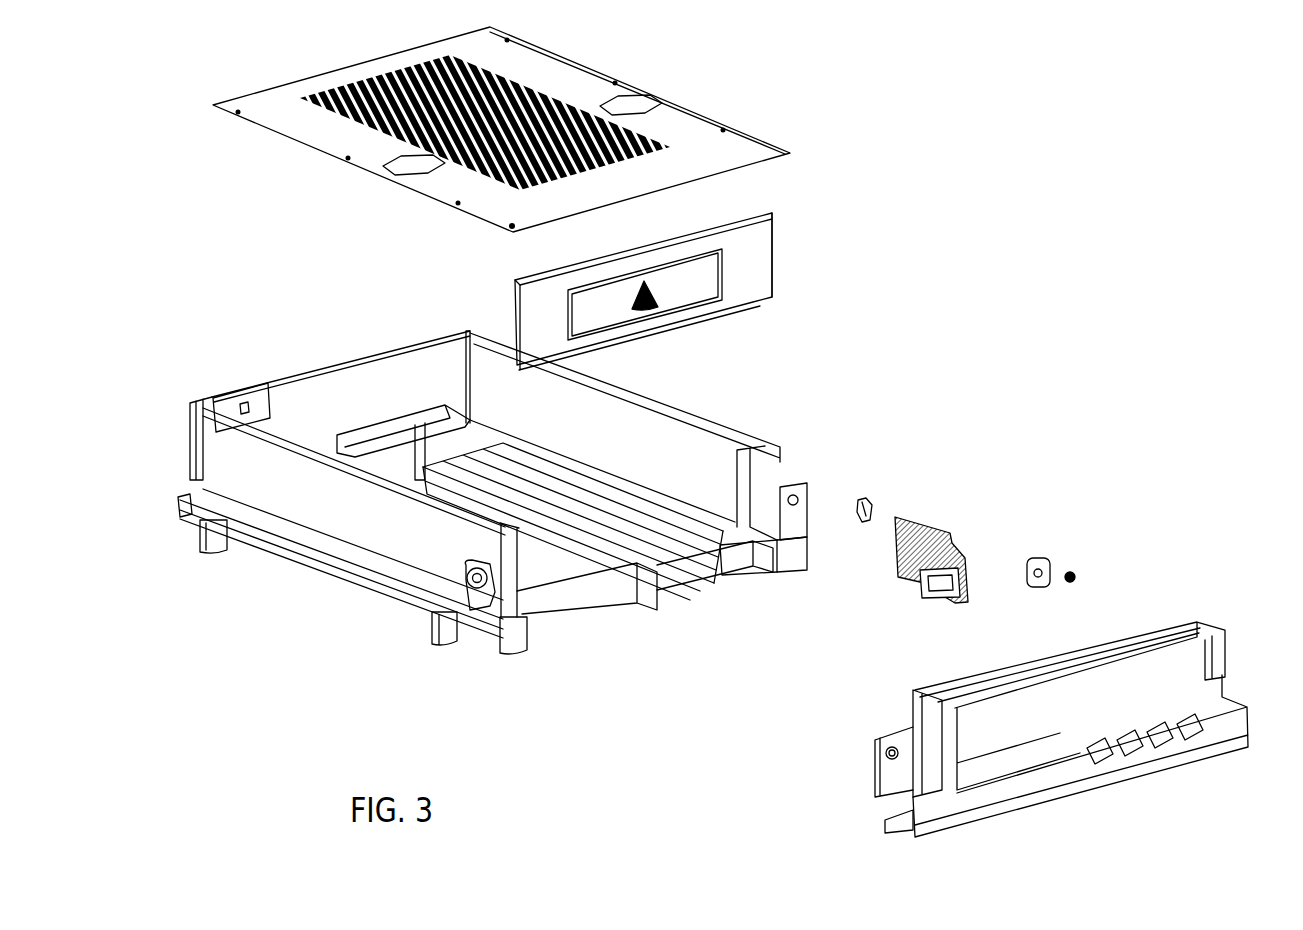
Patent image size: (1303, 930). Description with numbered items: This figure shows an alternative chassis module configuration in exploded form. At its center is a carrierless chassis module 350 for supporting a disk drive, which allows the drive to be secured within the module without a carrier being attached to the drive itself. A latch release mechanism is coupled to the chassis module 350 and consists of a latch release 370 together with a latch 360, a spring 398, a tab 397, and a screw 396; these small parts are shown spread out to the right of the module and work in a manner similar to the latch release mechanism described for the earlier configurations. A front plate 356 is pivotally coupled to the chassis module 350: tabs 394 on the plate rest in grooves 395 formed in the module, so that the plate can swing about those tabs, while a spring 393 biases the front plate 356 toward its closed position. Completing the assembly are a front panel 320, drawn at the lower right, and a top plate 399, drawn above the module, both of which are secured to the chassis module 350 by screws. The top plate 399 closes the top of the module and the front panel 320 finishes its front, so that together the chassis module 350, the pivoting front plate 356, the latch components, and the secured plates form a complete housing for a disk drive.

The top plate 399 is at (737, 140).
The front plate 356 is at (742, 305).
The tabs 394 is at (773, 214).
The spring 393 is at (515, 282).
The carrierless chassis module 350 is at (513, 493).
The grooves 395 is at (773, 443).
The latch release 370 is at (912, 515).
The latch 360 is at (957, 602).
The spring 398 is at (966, 527).
The tab 397 is at (1045, 559).
The screw 396 is at (1083, 564).
The front panel 320 is at (1190, 620).